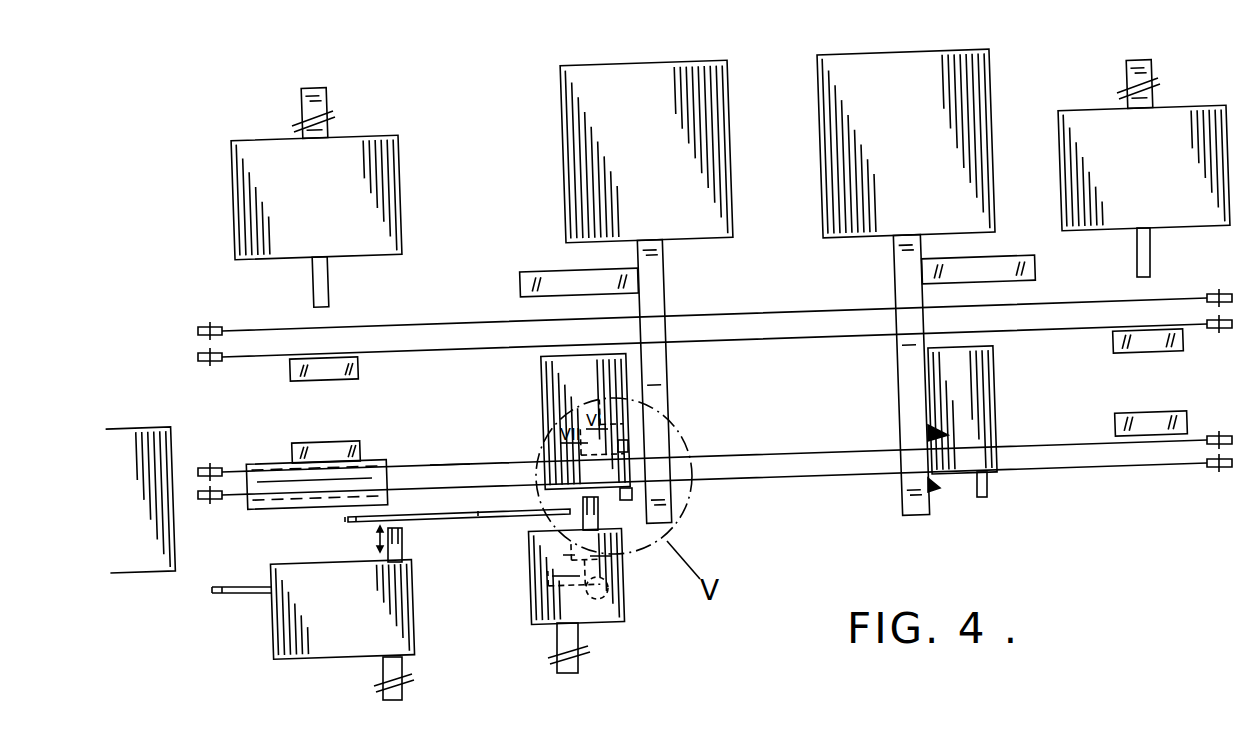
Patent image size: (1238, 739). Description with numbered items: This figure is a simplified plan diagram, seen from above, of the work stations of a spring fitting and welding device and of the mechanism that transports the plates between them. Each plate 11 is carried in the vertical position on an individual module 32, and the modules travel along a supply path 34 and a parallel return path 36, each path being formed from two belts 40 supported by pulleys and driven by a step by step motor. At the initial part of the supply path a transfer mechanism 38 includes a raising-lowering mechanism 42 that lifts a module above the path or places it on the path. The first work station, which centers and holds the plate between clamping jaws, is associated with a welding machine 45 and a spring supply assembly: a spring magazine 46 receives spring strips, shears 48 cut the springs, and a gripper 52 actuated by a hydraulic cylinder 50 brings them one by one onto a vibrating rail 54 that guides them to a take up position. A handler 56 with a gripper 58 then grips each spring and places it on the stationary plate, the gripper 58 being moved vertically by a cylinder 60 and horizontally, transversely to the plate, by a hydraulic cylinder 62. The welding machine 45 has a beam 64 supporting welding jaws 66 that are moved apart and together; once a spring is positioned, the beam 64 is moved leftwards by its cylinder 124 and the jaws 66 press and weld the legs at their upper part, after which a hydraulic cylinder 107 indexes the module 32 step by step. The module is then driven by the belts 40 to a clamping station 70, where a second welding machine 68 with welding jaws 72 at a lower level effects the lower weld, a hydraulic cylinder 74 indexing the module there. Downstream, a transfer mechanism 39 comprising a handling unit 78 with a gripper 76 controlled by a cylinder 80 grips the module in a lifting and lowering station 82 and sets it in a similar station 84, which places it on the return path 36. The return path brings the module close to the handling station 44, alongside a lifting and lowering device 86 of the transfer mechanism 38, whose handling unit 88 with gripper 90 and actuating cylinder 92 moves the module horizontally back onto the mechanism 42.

The plate 11 is at (292, 481).
The module 32 is at (384, 462).
The supply path 34 is at (449, 467).
The return path 36 is at (406, 326).
The transfer mechanism 38 is at (327, 78).
The transfer mechanism 39 is at (1150, 49).
The belts 40 is at (760, 468).
The raising-lowering mechanism 42 is at (343, 451).
The handling station 44 is at (150, 504).
The welding machine 45 is at (660, 222).
The spring magazine 46 is at (230, 592).
The shears 48 is at (364, 624).
The hydraulic cylinder 50 is at (386, 692).
The gripper 52 is at (403, 547).
The vibrating rail 54 is at (487, 516).
The handler 56 is at (572, 624).
The gripper 58 is at (583, 518).
The cylinder 60 is at (623, 603).
The hydraulic cylinder 62 is at (580, 664).
The beam 64 is at (668, 368).
The welding jaws 66 is at (630, 493).
The second welding machine 68 is at (925, 224).
The clamping station 70 is at (975, 389).
The welding jaws 72 is at (927, 483).
The hydraulic cylinder 74 is at (986, 491).
The gripper 76 is at (1151, 266).
The handling unit 78 is at (1160, 199).
The cylinder 80 is at (1145, 72).
The lifting and lowering station 82 is at (1172, 419).
The lifting and lowering station 84 is at (1120, 337).
The lifting and lowering device 86 is at (300, 371).
The handling unit 88 is at (334, 231).
The gripper 90 is at (316, 296).
The actuating cylinder 92 is at (320, 101).
The hydraulic cylinder 107 is at (640, 505).
The cylinder 124 is at (530, 275).